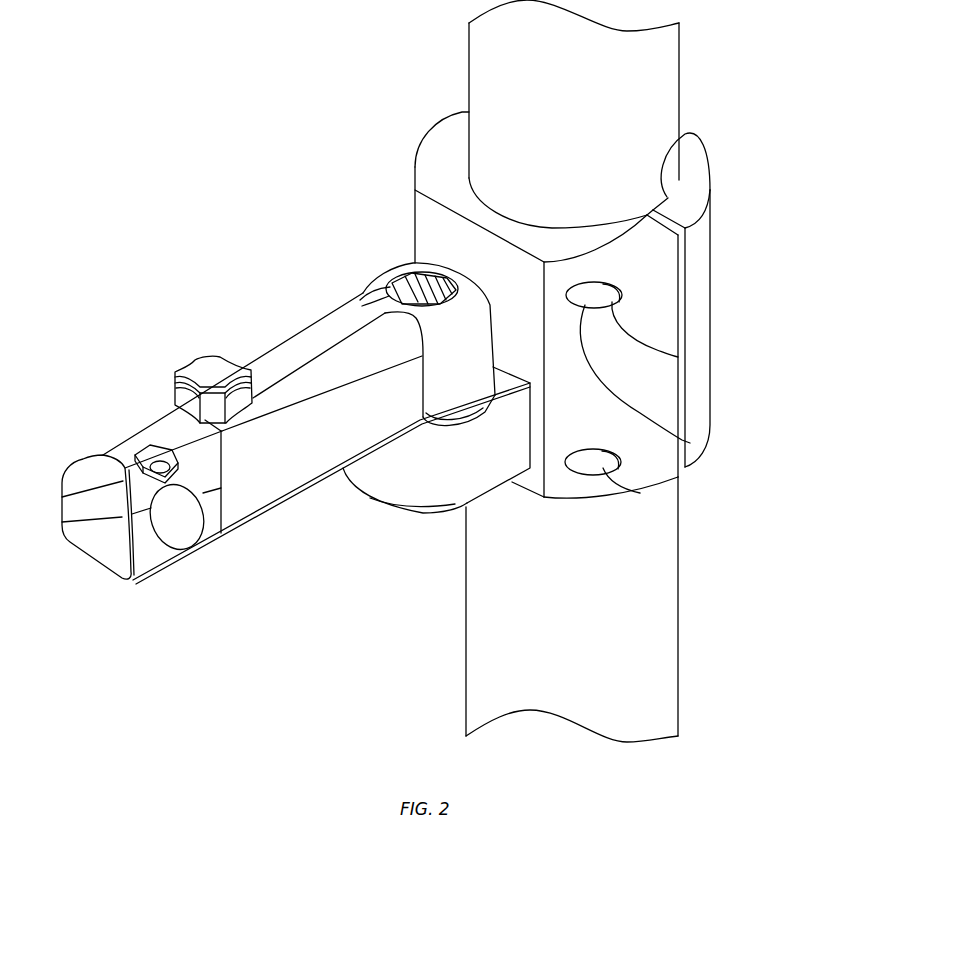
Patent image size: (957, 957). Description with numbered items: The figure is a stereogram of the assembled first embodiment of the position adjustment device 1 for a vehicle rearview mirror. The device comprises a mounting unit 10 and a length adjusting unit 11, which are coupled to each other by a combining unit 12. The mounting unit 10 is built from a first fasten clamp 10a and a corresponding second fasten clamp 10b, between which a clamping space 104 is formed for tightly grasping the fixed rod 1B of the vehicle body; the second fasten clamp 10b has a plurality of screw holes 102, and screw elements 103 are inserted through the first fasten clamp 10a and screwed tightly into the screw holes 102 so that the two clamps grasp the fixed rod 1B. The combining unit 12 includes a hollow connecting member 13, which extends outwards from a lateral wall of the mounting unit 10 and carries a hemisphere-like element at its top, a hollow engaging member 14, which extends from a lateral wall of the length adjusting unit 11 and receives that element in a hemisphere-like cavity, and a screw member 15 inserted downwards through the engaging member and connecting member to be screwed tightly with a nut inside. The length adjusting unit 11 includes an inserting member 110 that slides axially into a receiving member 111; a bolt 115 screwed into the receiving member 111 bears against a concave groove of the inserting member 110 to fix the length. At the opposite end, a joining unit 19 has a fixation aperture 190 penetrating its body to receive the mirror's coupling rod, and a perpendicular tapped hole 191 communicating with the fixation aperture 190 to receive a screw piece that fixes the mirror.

The position adjustment device 1 is at (436, 377).
The fixed rod 1B is at (628, 612).
The mounting unit 10 is at (585, 336).
The first fasten clamp 10a is at (442, 225).
The second fasten clamp 10b is at (698, 278).
The screw holes 102 is at (607, 293).
The screw elements 103 is at (672, 152).
The clamping space 104 is at (688, 442).
The length adjusting unit 11 is at (316, 420).
The receiving member 111 is at (275, 482).
The inserting member 110 is at (187, 379).
The bolt 115 is at (205, 373).
The combining unit 12 is at (396, 290).
The hollow connecting member 13 is at (392, 492).
The hollow engaging member 14 is at (380, 287).
The screw member 15 is at (402, 288).
The joining unit 19 is at (162, 483).
The fixation aperture 190 is at (173, 523).
The tapped hole 191 is at (157, 467).